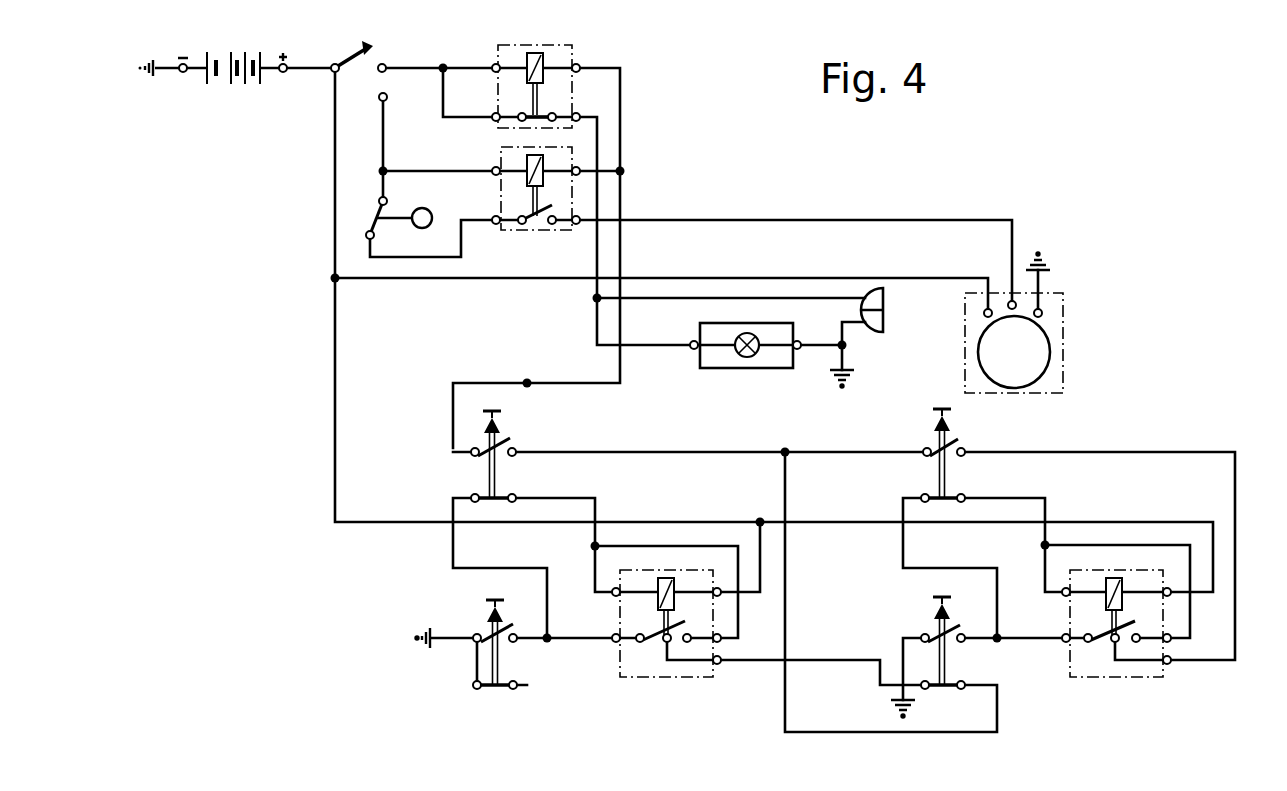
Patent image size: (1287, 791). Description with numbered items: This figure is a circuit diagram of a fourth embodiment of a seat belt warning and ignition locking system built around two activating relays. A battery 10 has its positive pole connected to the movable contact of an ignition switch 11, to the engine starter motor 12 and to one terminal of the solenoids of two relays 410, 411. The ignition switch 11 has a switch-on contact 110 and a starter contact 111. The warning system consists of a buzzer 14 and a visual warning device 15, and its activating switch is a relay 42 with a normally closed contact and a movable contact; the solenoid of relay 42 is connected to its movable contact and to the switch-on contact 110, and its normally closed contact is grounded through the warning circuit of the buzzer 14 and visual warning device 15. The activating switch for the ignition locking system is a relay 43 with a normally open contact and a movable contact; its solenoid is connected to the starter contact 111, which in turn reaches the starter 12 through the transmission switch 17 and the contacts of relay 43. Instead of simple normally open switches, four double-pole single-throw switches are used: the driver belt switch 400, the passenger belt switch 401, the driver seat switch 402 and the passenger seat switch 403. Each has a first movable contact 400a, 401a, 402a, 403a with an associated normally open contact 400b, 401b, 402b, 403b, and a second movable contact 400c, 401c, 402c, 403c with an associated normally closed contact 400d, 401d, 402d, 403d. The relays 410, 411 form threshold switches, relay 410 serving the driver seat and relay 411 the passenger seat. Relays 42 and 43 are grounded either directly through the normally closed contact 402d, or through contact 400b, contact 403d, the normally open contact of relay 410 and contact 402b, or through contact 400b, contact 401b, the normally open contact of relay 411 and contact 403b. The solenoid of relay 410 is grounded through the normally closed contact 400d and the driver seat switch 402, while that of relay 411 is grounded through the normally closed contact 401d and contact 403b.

The battery 10 is at (232, 62).
The ignition switch 11 is at (364, 48).
The switch-on contact 110 is at (384, 66).
The starter contact 111 is at (387, 97).
The engine starter motor 12 is at (1063, 325).
The buzzer 14 is at (884, 297).
The visual warning device 15 is at (700, 328).
The transmission switch 17 is at (399, 217).
The activating relay for the warning system 42 is at (573, 45).
The activating relay for the ignition locking system 43 is at (540, 231).
The driver belt switch 400 is at (519, 482).
The first movable contact of driver belt switch 400a is at (511, 443).
The normally open contact of driver belt switch 400b is at (516, 457).
The second movable contact of driver belt switch 400c is at (492, 505).
The normally closed contact of driver belt switch 400d is at (519, 497).
The passenger belt switch 401 is at (991, 481).
The first movable contact of passenger belt switch 401a is at (955, 444).
The normally open contact of passenger belt switch 401b is at (966, 457).
The second movable contact of passenger belt switch 401c is at (944, 505).
The normally closed contact of passenger belt switch 401d is at (968, 499).
The driver seat switch 402 is at (510, 662).
The first movable contact of driver seat switch 402a is at (483, 631).
The normally open contact of driver seat switch 402b is at (515, 650).
The second movable contact of driver seat switch 402c is at (487, 690).
The normally closed contact of driver seat switch 402d is at (513, 690).
The passenger seat switch 403 is at (964, 653).
The first movable contact of passenger seat switch 403a is at (931, 634).
The normally open contact of passenger seat switch 403b is at (961, 632).
The second movable contact of passenger seat switch 403c is at (951, 690).
The normally closed contact of passenger seat switch 403d is at (968, 688).
The relay 410 is at (668, 679).
The relay 411 is at (1118, 679).